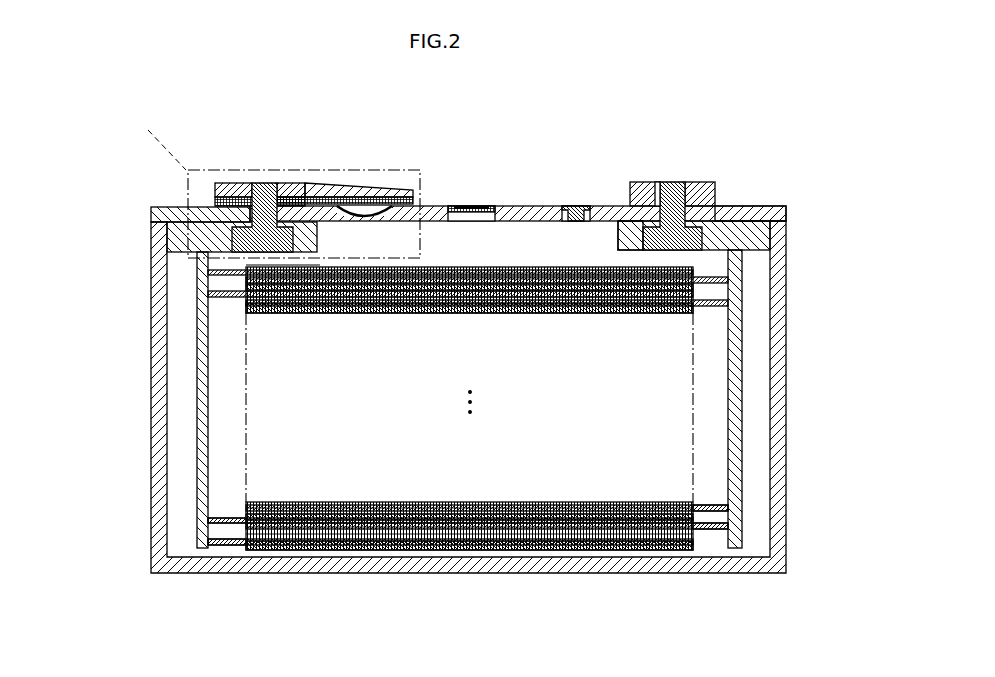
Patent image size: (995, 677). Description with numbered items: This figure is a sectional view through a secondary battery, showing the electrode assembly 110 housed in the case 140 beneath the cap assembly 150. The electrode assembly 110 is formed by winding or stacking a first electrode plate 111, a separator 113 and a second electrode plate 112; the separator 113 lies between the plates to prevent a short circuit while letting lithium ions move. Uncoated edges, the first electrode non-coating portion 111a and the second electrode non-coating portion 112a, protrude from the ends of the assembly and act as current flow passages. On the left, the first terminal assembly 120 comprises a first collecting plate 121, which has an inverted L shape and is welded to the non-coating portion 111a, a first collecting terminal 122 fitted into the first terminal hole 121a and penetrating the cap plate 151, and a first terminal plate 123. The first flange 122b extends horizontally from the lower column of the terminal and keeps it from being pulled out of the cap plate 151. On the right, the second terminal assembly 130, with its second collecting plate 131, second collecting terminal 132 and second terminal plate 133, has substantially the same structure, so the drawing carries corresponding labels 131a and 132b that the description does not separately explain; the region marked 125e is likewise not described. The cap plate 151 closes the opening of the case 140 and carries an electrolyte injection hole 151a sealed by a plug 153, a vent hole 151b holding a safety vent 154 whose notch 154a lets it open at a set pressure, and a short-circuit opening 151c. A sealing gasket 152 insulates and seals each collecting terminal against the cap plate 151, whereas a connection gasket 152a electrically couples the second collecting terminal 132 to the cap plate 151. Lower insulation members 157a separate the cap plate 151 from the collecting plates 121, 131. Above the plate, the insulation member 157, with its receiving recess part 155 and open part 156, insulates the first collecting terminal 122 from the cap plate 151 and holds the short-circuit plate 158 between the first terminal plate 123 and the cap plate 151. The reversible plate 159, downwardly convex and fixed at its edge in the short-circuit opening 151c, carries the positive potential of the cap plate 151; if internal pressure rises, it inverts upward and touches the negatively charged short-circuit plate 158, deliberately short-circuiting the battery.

The electrode assembly 110 is at (469, 447).
The first electrode plate 111 is at (352, 550).
The first electrode non-coating portion 111a is at (228, 547).
The second electrode plate 112 is at (620, 550).
The second electrode non-coating portion 112a is at (712, 530).
The separator 113 is at (481, 550).
The first terminal assembly 120 is at (80, 170).
The first collecting plate 121 is at (160, 216).
The first terminal hole 121a is at (205, 262).
The first collecting terminal 122 is at (202, 143).
The first flange 122b is at (298, 226).
The first terminal plate 123 is at (243, 207).
The short-circuit region 125e is at (421, 171).
The second terminal assembly 130 is at (765, 119).
The second collecting plate 131 is at (726, 210).
The second current collector 131a is at (746, 262).
The second collecting terminal 132 is at (672, 182).
The second electrode pin flange 132b is at (625, 212).
The second terminal plate 133 is at (697, 182).
The case 140 is at (778, 370).
The cap assembly 150 is at (542, 126).
The cap plate 151 is at (527, 206).
The electrolyte injection hole 151a is at (570, 221).
The vent hole 151b is at (470, 221).
The short-circuit opening 151c is at (390, 220).
The sealing gasket 152 is at (283, 266).
The connection gasket 152a is at (657, 182).
The plug 153 is at (574, 206).
The safety vent 154 is at (490, 206).
The notch 154a is at (468, 206).
The receiving recess part 155 is at (219, 180).
The open part 156 is at (298, 160).
The insulation member 157 is at (264, 143).
The lower insulation members 157a is at (190, 238).
The short-circuit plate 158 is at (366, 197).
The reversible plate 159 is at (386, 194).